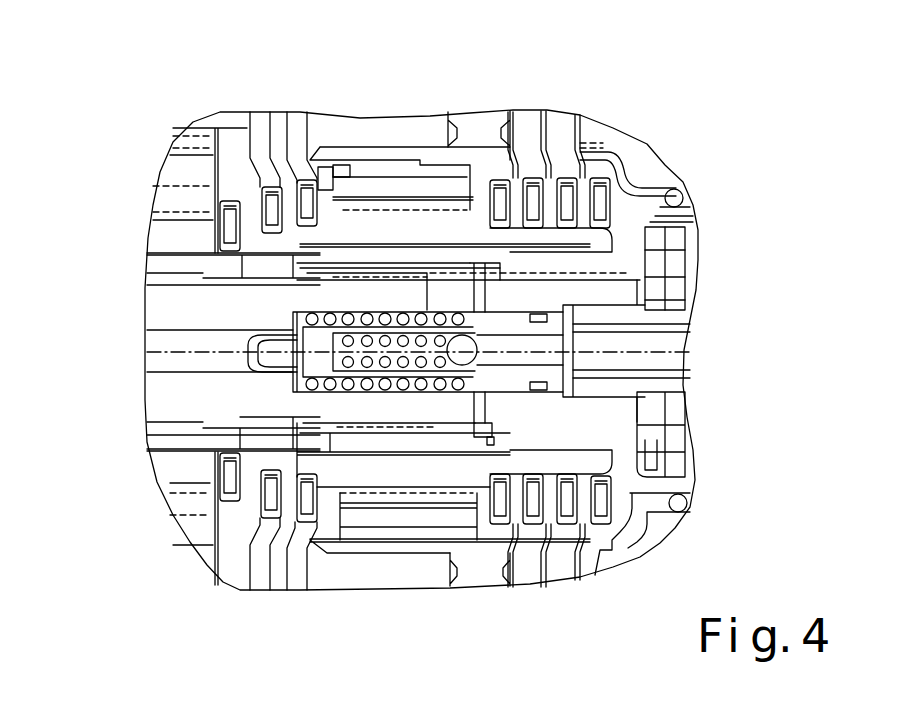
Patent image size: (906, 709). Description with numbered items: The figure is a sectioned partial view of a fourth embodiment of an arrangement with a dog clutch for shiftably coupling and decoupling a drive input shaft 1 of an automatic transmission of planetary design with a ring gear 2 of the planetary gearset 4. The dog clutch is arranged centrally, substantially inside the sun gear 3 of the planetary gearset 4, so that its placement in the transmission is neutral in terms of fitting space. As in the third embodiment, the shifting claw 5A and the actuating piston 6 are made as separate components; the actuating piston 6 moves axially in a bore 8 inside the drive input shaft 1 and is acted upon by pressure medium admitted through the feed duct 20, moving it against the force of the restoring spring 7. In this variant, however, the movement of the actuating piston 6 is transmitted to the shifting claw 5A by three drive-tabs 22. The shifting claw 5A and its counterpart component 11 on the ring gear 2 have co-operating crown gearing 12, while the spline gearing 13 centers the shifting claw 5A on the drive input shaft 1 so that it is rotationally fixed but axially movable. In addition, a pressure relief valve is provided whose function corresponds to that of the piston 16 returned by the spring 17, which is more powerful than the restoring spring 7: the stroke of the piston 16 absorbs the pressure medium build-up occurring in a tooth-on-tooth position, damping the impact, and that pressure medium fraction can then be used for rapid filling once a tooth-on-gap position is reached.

The drive input shaft 1 is at (187, 300).
The ring gear 2 is at (277, 568).
The sun gear 3 is at (458, 228).
The planetary gearset 4 is at (476, 146).
The shifting claw 5A is at (410, 262).
The actuating piston 6 is at (643, 227).
The restoring spring 7 is at (250, 337).
The bore 8 is at (607, 303).
The counterpart component 11 is at (277, 262).
The crown gearing 12 is at (305, 180).
The spline gearing 13 is at (368, 270).
The piston 16 is at (388, 333).
The spring 17 is at (397, 368).
The feed duct 20 is at (667, 347).
The drive-tab 22 is at (513, 325).